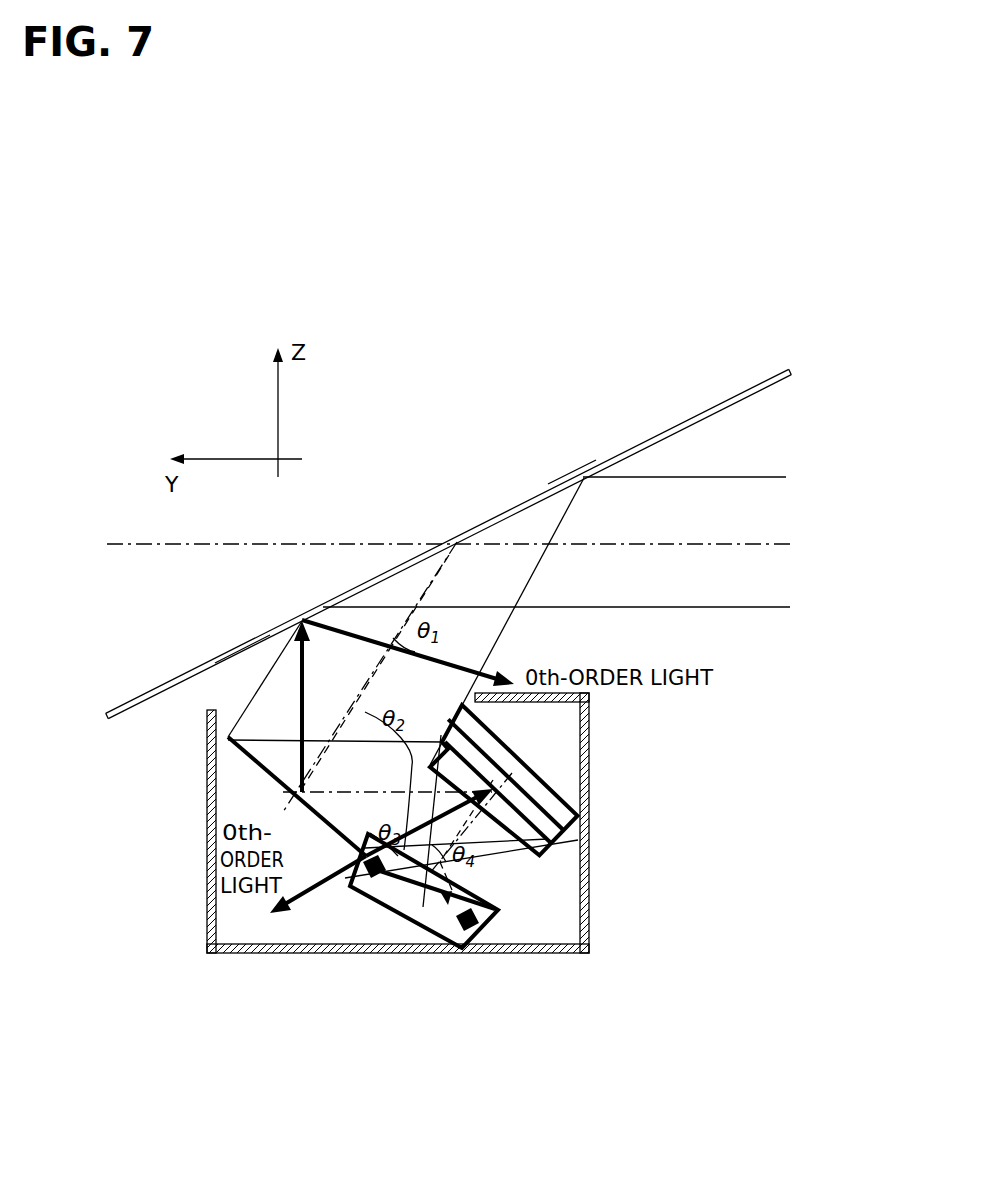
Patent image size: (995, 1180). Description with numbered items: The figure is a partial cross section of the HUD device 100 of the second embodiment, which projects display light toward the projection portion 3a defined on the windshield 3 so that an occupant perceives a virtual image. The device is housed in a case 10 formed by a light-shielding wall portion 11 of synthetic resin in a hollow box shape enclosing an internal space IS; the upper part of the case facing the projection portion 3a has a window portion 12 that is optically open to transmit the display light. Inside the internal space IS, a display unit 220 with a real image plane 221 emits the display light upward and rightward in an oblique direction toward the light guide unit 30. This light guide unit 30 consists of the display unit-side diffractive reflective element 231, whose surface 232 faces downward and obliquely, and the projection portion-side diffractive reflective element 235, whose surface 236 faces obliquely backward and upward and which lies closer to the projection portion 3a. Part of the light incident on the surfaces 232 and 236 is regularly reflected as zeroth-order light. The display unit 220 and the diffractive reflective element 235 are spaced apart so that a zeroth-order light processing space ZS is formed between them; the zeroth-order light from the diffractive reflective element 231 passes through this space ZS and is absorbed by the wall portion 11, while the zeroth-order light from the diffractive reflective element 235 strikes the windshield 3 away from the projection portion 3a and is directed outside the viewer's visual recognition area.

The windshield 3 is at (690, 420).
The projection portion 3a is at (568, 486).
The window portion 12 is at (236, 654).
The light guide unit 30 is at (400, 783).
The diffractive reflective element 235 is at (240, 749).
The surface 236 is at (257, 765).
The diffractive reflective element 231 is at (540, 766).
The surface 232 is at (525, 853).
The display unit 220 is at (432, 946).
The real image plane 221 is at (484, 890).
The case 10 is at (207, 910).
The wall portion 11 is at (580, 912).
The HUD device 100 is at (179, 947).
The 0th-order light processing space ZS is at (345, 868).
The internal space IS is at (334, 923).